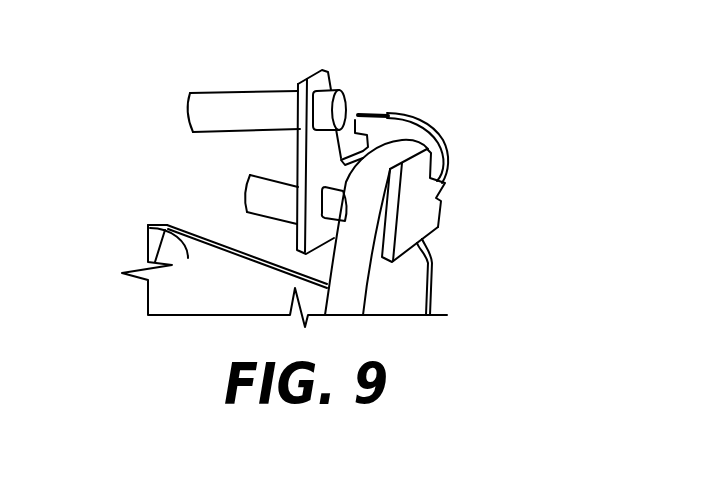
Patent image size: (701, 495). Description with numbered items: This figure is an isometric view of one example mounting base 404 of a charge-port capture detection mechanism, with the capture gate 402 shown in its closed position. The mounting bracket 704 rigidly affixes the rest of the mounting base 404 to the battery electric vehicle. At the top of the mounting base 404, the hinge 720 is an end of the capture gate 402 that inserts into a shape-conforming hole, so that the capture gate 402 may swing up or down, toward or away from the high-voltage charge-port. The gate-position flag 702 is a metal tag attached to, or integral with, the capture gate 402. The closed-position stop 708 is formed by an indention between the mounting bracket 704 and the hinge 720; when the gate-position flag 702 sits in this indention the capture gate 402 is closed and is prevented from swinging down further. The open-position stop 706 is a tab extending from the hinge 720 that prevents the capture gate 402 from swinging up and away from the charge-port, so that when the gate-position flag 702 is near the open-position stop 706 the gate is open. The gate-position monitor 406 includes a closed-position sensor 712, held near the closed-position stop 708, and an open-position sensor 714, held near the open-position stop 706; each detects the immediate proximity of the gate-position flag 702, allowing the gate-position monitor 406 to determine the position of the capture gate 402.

The gate-position monitor 406 is at (112, 97).
The open-position sensor 714 is at (186, 109).
The closed-position sensor 712 is at (250, 197).
The mounting bracket 704 is at (175, 228).
The open-position stop 706 is at (388, 113).
The capture gate 402 is at (398, 145).
The hinge 720 is at (445, 116).
The mounting base 404 is at (476, 137).
The gate-position flag 702 is at (430, 210).
The closed-position stop 708 is at (437, 247).